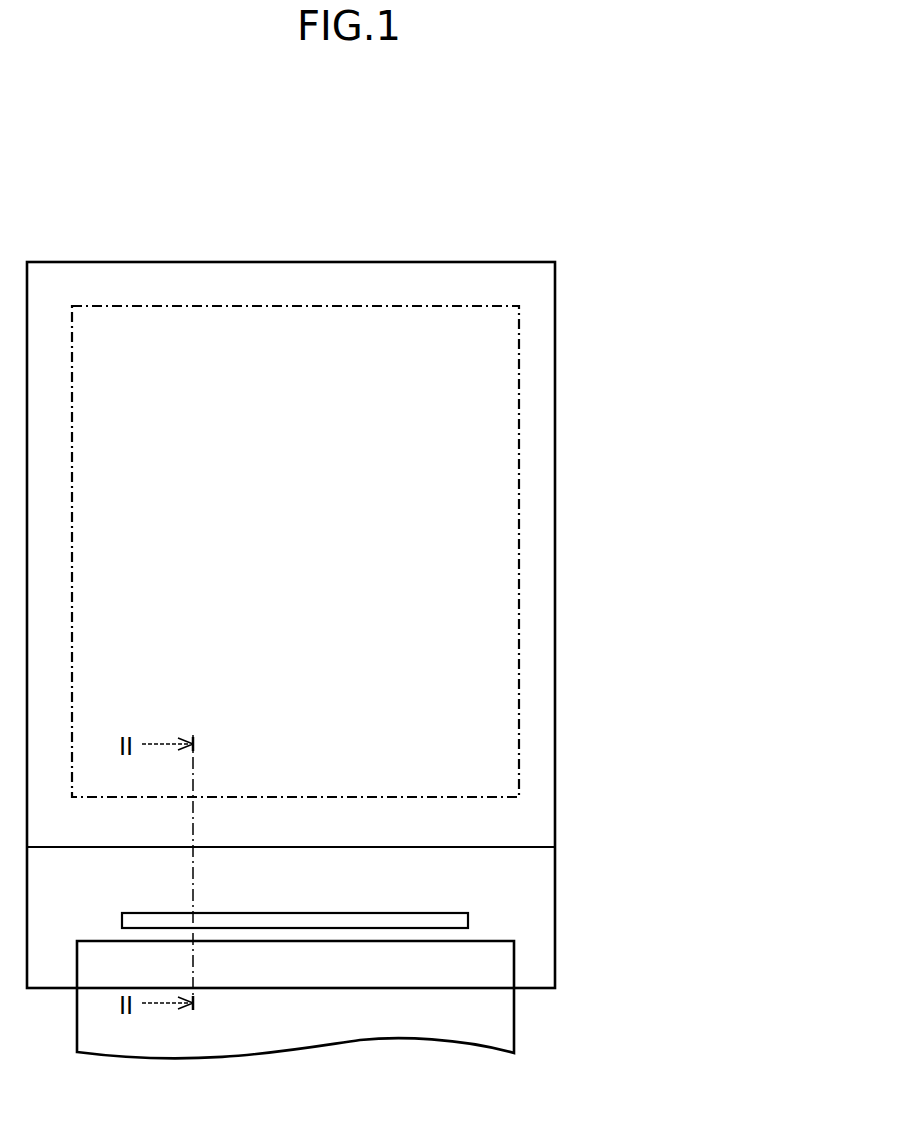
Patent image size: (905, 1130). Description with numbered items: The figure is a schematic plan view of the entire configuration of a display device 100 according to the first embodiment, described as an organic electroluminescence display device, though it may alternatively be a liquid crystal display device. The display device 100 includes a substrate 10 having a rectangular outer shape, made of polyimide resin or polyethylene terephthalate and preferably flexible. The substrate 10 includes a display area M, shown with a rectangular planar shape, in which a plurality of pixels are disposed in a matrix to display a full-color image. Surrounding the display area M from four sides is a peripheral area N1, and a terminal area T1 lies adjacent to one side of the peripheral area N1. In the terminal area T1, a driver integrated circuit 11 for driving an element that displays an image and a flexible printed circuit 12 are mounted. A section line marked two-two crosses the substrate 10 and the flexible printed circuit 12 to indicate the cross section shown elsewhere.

The display device 100 is at (578, 243).
The substrate 10 is at (135, 262).
The display area M is at (520, 578).
The peripheral area N1 is at (548, 810).
The terminal area T1 is at (548, 968).
The driver integrated circuit 11 is at (445, 912).
The flexible printed circuit 12 is at (517, 1022).